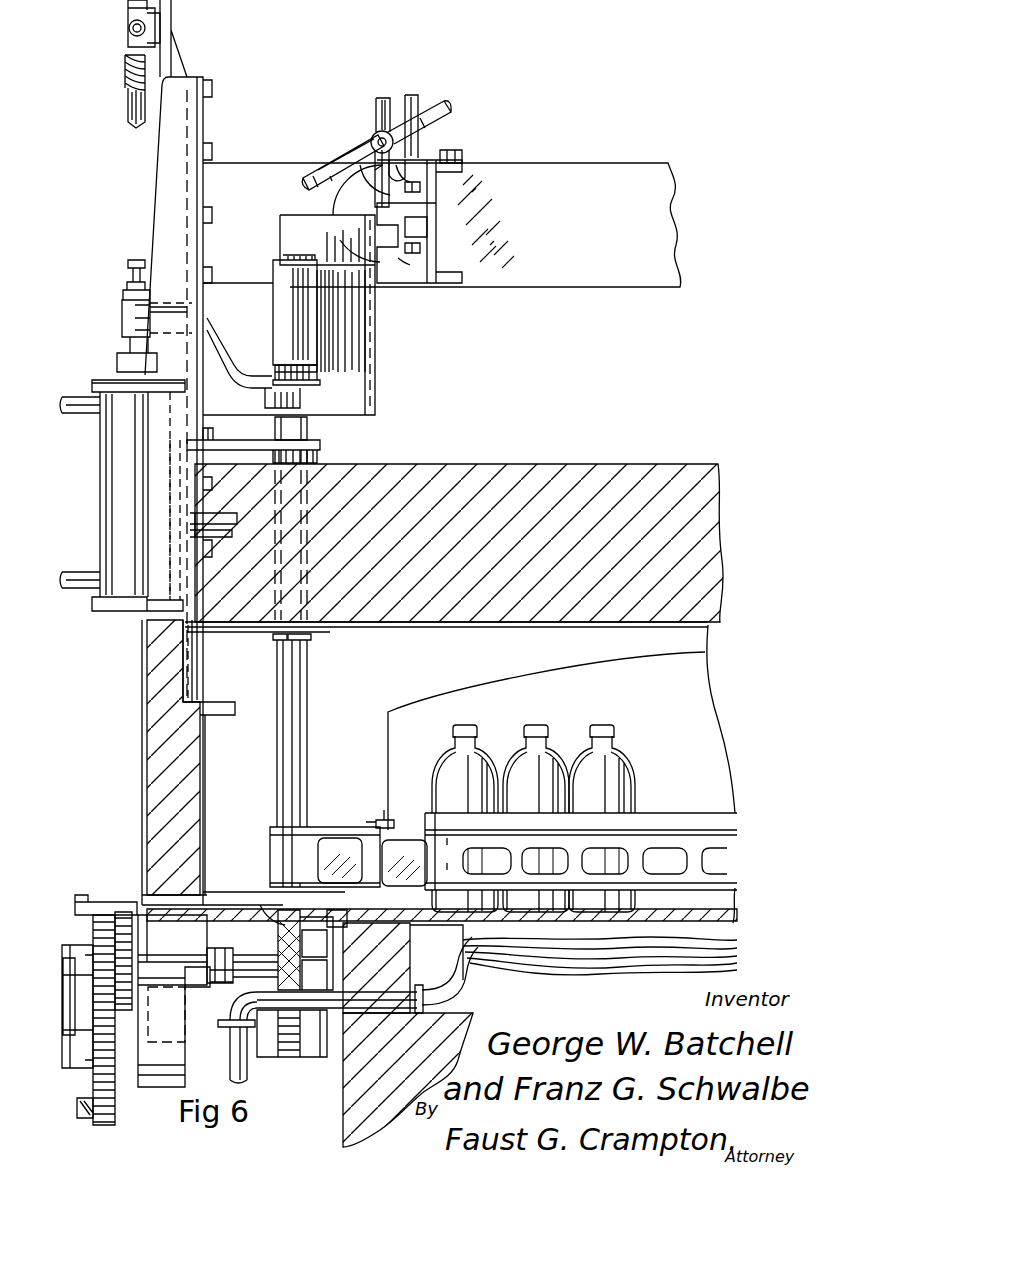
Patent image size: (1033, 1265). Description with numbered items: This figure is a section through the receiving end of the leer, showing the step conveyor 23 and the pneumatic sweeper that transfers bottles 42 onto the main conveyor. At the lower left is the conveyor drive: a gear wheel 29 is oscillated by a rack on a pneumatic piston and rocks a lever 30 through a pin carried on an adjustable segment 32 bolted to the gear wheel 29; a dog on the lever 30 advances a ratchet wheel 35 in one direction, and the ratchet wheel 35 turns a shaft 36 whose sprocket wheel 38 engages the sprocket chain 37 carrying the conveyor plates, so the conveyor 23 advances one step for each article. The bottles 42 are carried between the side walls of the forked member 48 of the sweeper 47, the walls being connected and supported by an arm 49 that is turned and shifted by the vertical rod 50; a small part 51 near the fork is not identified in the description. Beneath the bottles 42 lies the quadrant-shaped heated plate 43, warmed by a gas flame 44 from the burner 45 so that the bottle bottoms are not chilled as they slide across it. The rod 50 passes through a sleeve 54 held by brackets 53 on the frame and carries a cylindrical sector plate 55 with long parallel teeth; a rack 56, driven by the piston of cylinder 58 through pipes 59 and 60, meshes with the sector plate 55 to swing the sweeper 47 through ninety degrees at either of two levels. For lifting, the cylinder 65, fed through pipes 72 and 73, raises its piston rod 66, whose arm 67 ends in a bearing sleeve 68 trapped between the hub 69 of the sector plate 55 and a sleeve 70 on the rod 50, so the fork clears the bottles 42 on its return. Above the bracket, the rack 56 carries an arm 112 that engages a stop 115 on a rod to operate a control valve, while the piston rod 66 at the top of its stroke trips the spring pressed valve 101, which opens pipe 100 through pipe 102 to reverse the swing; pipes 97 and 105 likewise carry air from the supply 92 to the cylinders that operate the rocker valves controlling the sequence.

The conveyor 23 is at (272, 903).
The gear wheel 29 is at (95, 1050).
The lever 30 is at (85, 940).
The segment 32 is at (85, 1030).
The ratchet wheel 35 is at (97, 992).
The shaft 36 is at (254, 965).
The sprocket chain 37 is at (290, 1058).
The sprocket wheel 38 is at (270, 978).
The bottles 42 is at (618, 770).
The plate 43 is at (734, 917).
The gas flame 44 is at (553, 957).
The burner 45 is at (445, 995).
The sweeper 47 is at (304, 774).
The forked member 48 is at (672, 822).
The arm 49 is at (330, 832).
The rod 50 is at (300, 700).
The bracket 51 is at (388, 822).
The brackets 53 is at (248, 632).
The sleeve 54 is at (320, 456).
The sector plate 55 is at (378, 386).
The rack 56 is at (405, 265).
The cylinder 58 is at (353, 207).
The pipe 59 is at (375, 101).
The pipe 60 is at (407, 95).
The cylinder 65 is at (108, 487).
The piston rod 66 is at (126, 343).
The arm 67 is at (226, 352).
The bearing sleeve 68 is at (320, 378).
The hub 69 is at (276, 302).
The sleeve 70 is at (310, 424).
The pipe 72 is at (70, 578).
The pipe 73 is at (74, 408).
The source of air supply 92 is at (328, 176).
The pipe 97 is at (447, 117).
The pipe 100 is at (132, 110).
The spring pressed valve 101 is at (130, 12).
The pipe 102 is at (130, 32).
The pipe 105 is at (433, 108).
The arm 112 is at (378, 185).
The stop 115 is at (373, 137).